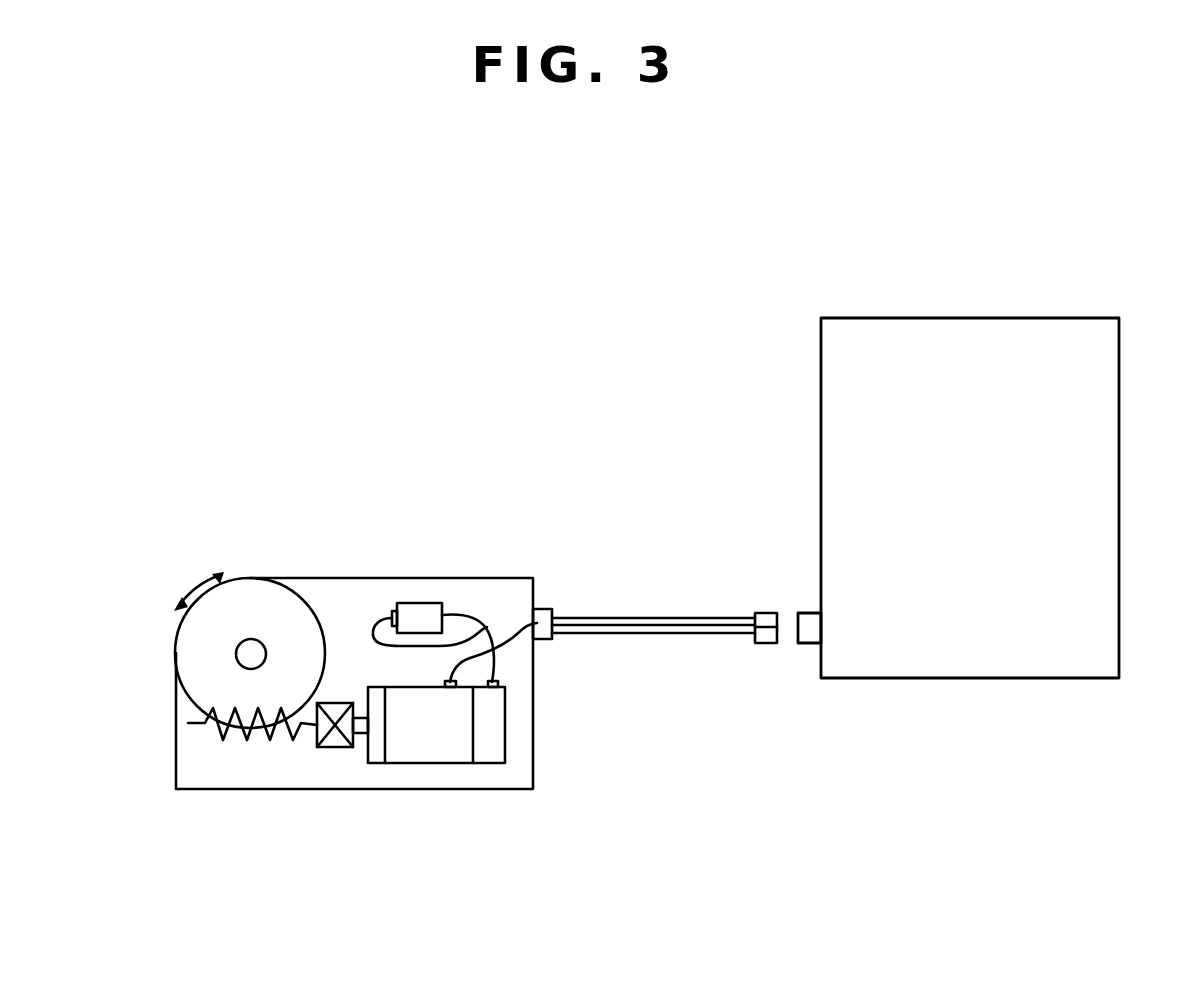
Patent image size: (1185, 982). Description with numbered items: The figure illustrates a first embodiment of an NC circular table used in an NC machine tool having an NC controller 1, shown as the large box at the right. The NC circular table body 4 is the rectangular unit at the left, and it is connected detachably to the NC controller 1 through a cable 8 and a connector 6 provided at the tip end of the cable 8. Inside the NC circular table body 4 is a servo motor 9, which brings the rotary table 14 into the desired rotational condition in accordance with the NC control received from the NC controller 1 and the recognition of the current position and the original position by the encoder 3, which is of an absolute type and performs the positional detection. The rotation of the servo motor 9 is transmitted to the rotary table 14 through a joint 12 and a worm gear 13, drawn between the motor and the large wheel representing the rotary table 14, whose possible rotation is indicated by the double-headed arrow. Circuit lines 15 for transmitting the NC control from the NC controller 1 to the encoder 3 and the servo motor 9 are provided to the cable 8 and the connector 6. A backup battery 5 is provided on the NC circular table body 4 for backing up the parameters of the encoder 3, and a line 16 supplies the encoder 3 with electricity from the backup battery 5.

The NC controller 1 is at (1105, 472).
The encoder 3 is at (490, 753).
The NC circular table body 4 is at (347, 562).
The backup battery 5 is at (415, 612).
The connector 6 is at (763, 643).
The cable 8 is at (667, 635).
The servo motor 9 is at (407, 753).
The joint 12 is at (327, 747).
The worm gear 13 is at (245, 740).
The rotary table 14 is at (180, 655).
The circuit lines 15 is at (507, 650).
The line 16 is at (473, 613).